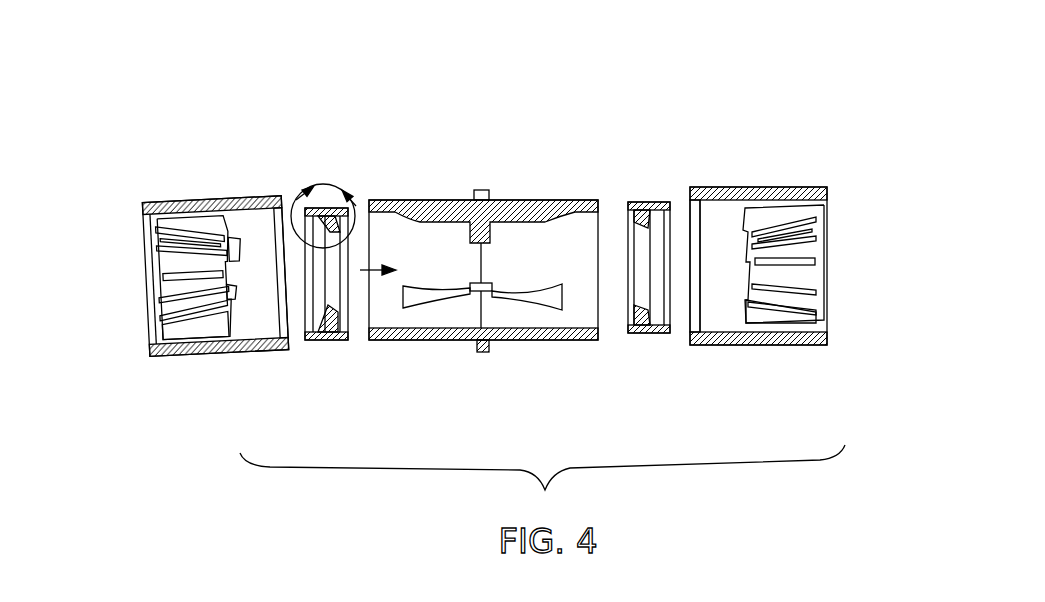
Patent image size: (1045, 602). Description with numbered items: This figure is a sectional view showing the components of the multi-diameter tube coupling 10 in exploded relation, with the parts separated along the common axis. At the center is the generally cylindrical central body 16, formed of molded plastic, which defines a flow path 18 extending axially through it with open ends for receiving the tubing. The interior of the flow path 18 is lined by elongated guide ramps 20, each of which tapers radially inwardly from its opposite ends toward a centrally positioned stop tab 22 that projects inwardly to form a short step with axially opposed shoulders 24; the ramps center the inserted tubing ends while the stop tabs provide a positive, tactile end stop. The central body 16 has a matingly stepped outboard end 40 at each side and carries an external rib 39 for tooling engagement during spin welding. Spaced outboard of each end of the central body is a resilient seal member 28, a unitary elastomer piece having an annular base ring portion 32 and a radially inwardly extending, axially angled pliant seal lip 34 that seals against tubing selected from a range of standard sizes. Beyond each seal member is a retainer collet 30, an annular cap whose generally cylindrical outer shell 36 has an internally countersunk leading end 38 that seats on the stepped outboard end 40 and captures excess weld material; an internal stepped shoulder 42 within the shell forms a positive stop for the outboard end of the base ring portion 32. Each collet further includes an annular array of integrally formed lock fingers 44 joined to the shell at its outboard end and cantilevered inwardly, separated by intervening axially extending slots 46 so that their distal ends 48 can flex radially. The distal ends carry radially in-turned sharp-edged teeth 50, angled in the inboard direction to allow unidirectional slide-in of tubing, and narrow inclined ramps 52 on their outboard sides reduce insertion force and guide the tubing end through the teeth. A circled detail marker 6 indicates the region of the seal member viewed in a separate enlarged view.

The view direction indicator for FIG. 6 is at (323, 209).
The tube coupling 10 is at (481, 268).
The central body 16 is at (512, 359).
The flow path 18 is at (360, 268).
The guide ramp 20 is at (483, 246).
The stop tab 22 is at (476, 238).
The shoulders 24 is at (482, 290).
The seal member 28 is at (494, 222).
The retainer collet 30 is at (481, 289).
The base ring portion 32 is at (474, 300).
The seal lip 34 is at (484, 298).
The outer shell 36 is at (494, 247).
The countersunk leading end 38 is at (464, 279).
The external rib 39 is at (504, 163).
The stepped outboard end 40 is at (500, 233).
The internal stepped shoulder 42 is at (490, 323).
The lock fingers 44 is at (167, 208).
The slots 46 is at (157, 251).
The distal ends 48 is at (233, 325).
The teeth 50 is at (240, 245).
The inclined ramps 52 is at (167, 275).